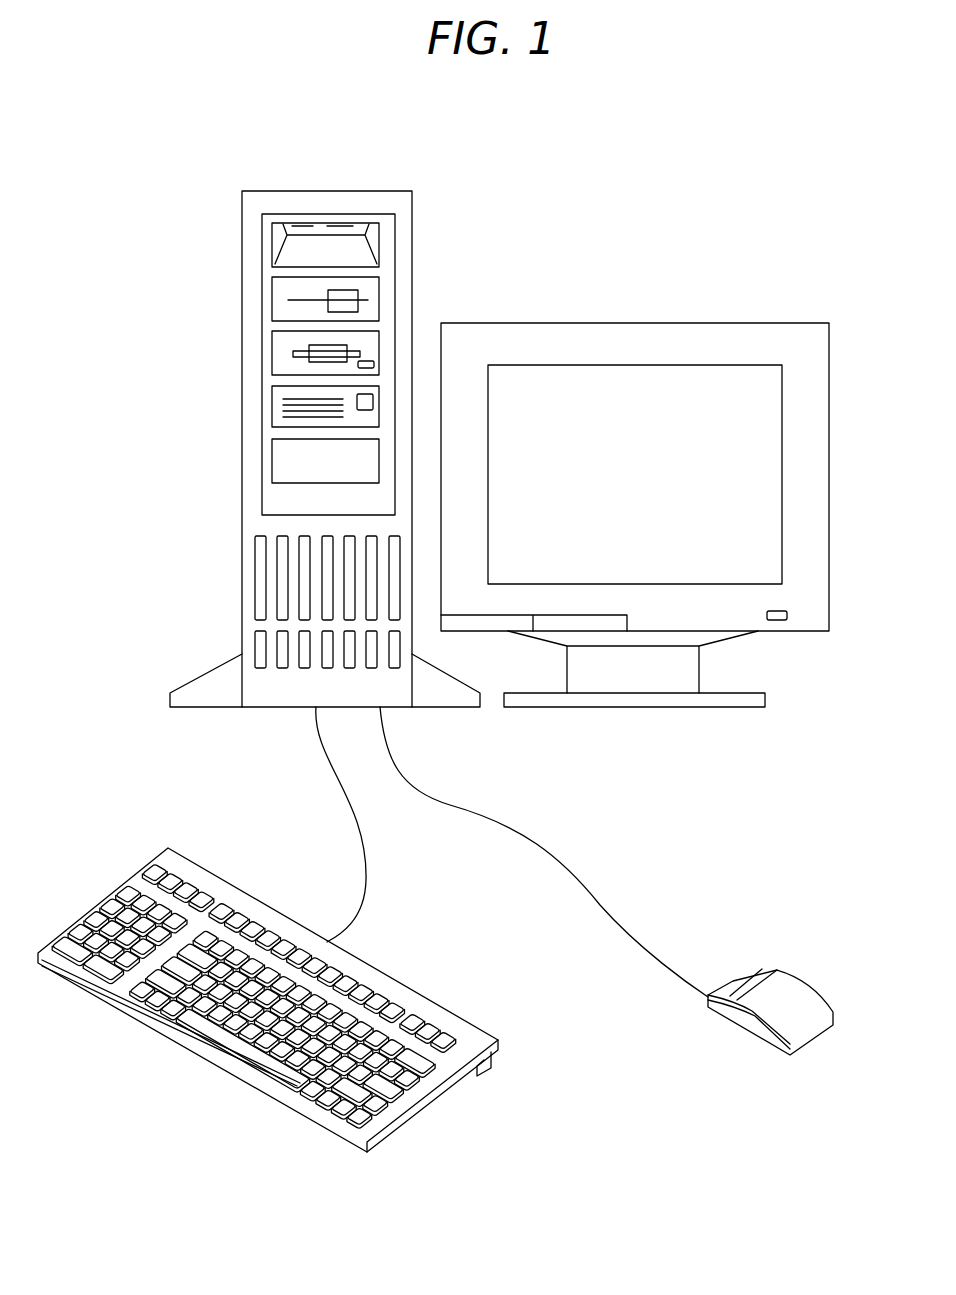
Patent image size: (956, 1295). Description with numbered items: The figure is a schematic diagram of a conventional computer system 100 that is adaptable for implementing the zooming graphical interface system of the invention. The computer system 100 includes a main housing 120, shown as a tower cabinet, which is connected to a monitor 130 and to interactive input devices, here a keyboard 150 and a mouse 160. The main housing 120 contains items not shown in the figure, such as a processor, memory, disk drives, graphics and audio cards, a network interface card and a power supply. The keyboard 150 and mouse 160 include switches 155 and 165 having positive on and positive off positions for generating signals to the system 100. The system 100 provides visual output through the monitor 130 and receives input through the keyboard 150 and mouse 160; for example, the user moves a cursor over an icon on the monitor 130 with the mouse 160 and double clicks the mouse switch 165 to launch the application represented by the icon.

The computer system 100 is at (647, 255).
The main housing 120 is at (327, 191).
The monitor 130 is at (829, 476).
The keyboard 150 is at (130, 877).
The switch 155 is at (250, 1002).
The mouse 160 is at (762, 968).
The mouse switch 165 is at (708, 995).